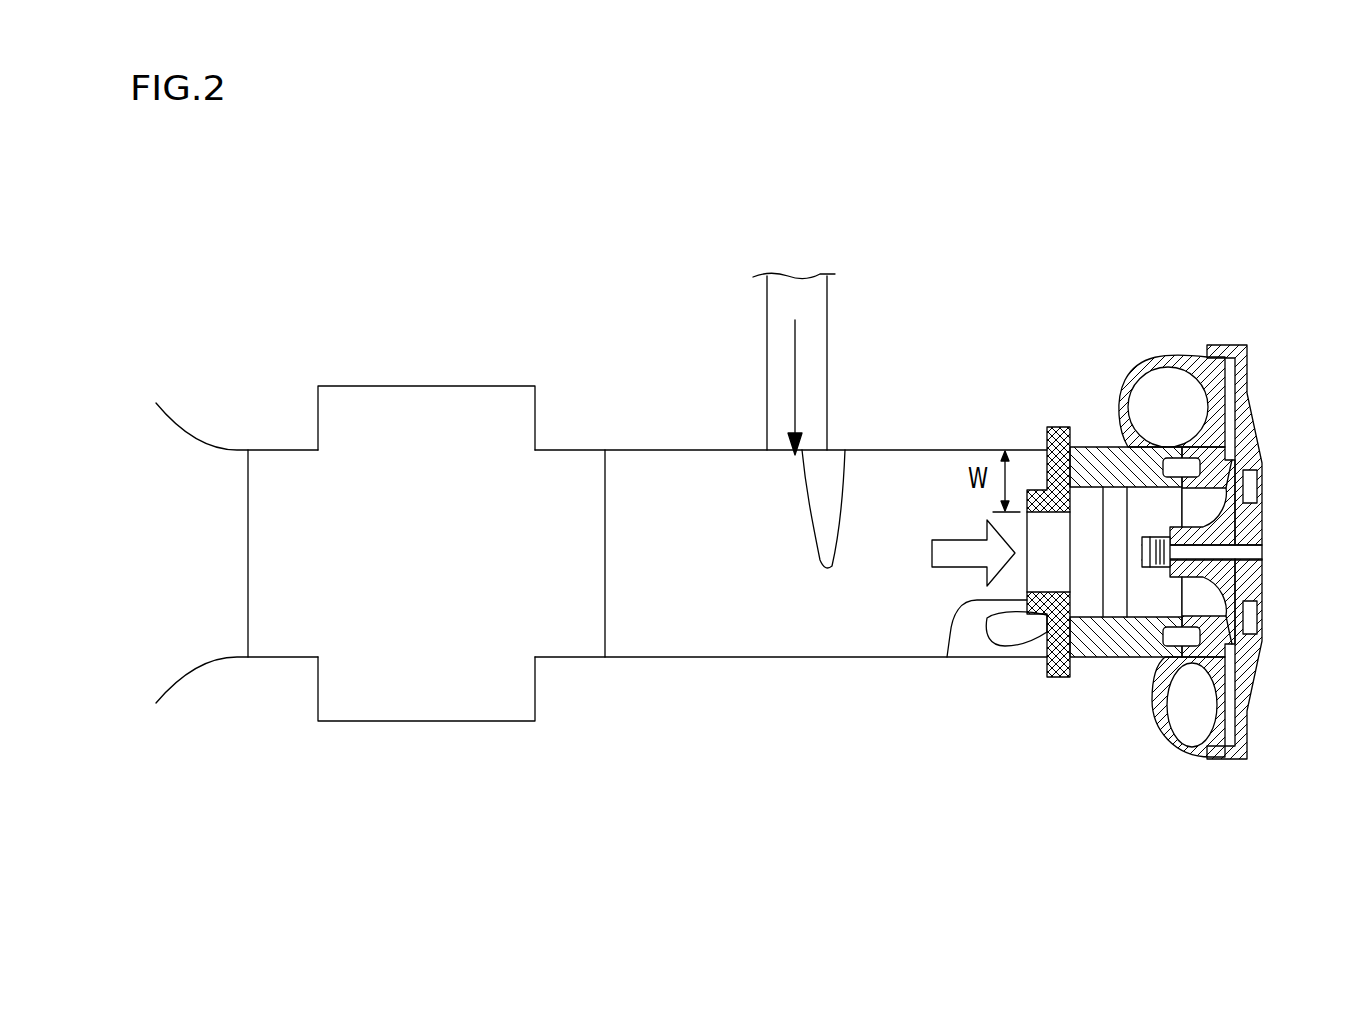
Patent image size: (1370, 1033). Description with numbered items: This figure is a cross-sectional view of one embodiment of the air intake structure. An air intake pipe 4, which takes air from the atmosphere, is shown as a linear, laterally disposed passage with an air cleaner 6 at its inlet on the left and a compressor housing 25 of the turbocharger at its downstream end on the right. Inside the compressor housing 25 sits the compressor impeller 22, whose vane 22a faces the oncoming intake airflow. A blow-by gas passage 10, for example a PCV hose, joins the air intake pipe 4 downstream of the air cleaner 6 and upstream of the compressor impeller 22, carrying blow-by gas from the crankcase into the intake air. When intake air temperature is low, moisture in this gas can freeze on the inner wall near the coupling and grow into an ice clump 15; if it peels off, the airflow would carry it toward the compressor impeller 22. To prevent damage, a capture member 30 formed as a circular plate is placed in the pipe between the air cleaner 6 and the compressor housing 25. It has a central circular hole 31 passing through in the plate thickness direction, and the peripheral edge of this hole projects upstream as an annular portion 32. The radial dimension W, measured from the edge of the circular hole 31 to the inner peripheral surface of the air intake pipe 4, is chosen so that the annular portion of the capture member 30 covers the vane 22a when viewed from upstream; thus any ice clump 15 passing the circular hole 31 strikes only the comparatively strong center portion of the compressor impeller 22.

The air intake pipe 4 is at (680, 449).
The air cleaner 6 is at (423, 690).
The blow-by gas passage 10 is at (807, 275).
The ice clump 15 is at (808, 515).
The compressor impeller 22 is at (1235, 572).
The vane 22a is at (1240, 463).
The compressor housing 25 is at (1177, 352).
The capture member 30 is at (1047, 423).
The circular hole 31 is at (1070, 527).
The annular portion 32 is at (947, 657).